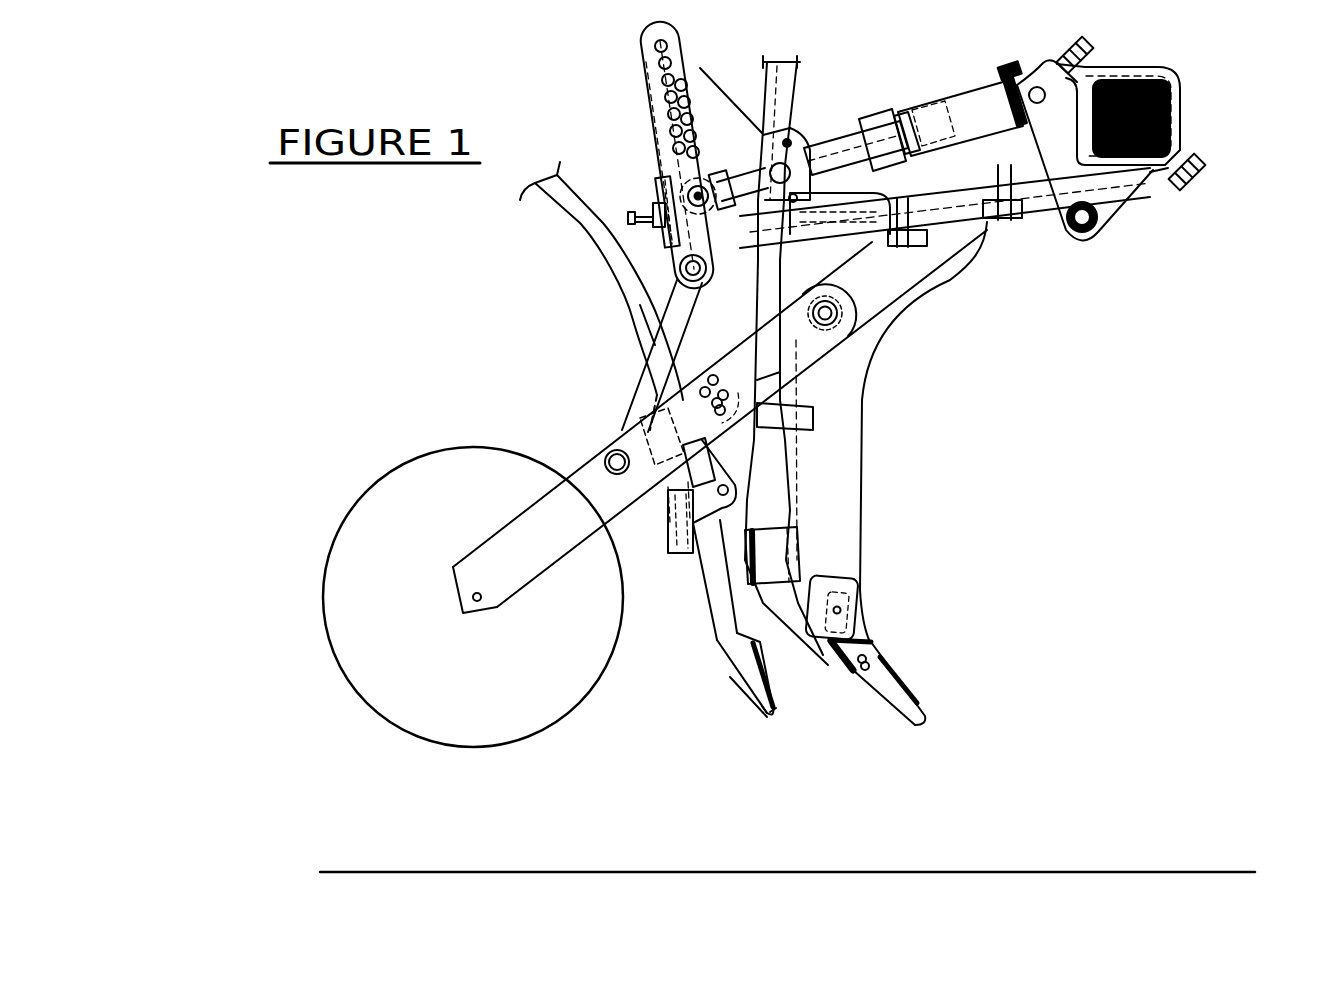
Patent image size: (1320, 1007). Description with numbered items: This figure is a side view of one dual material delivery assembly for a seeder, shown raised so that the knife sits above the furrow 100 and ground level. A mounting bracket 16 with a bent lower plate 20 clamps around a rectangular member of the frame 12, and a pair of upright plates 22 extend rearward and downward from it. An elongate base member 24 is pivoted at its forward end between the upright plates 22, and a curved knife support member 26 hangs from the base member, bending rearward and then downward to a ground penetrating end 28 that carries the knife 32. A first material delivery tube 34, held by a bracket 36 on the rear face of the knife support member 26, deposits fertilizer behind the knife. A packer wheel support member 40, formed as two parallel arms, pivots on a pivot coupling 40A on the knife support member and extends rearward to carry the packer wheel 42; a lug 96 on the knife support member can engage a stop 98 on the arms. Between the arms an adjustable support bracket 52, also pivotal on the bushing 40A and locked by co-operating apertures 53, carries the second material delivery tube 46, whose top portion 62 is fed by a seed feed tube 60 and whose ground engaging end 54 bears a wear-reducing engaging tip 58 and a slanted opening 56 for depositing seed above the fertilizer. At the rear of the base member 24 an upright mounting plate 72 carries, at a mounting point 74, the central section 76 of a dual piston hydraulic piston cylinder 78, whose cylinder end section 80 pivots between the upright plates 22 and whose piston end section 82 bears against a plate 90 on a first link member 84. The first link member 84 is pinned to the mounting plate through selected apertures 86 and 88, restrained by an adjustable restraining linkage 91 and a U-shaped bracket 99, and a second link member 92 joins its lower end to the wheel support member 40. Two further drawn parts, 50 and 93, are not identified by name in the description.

The frame 12 is at (1170, 120).
The mounting bracket 16 is at (1130, 58).
The lower plate 20 is at (1160, 175).
The upright plates 22 is at (1050, 70).
The base member 24 is at (1035, 200).
The knife support member 26 is at (897, 285).
The ground penetrating end 28 is at (852, 612).
The knife 32 is at (905, 707).
The first material delivery tube 34 is at (767, 510).
The bracket 36 is at (787, 563).
The packer wheel support member 40 is at (513, 548).
The pivot coupling 40A is at (840, 292).
The packer wheel 42 is at (360, 570).
The second material delivery tube 46 is at (710, 600).
The clamp bracket 50 is at (680, 413).
The adjustable support bracket 52 is at (772, 307).
The co-operating apertures 53 is at (740, 400).
The ground engaging end 54 is at (730, 660).
The opening 56 is at (747, 698).
The engaging tip 58 is at (773, 708).
The feed tube 60 is at (553, 205).
The top portion 62 is at (645, 363).
The mounting plate 72 is at (696, 72).
The mounting point 74 is at (820, 142).
The central section 76 is at (860, 135).
The dual piston hydraulic piston cylinder 78 is at (917, 90).
The cylinder end section 80 is at (967, 100).
The piston end section 82 is at (757, 128).
The first link member 84 is at (655, 135).
The apertures 86 is at (654, 47).
The apertures 88 is at (655, 70).
The plate 90 is at (658, 264).
The adjustable restraining linkage 91 is at (680, 270).
The second link member 92 is at (663, 318).
The mounting block 93 is at (800, 228).
The lug 96 is at (815, 422).
The stop 98 is at (757, 377).
The U-shaped bracket 99 is at (628, 216).
The furrow 100 is at (920, 872).